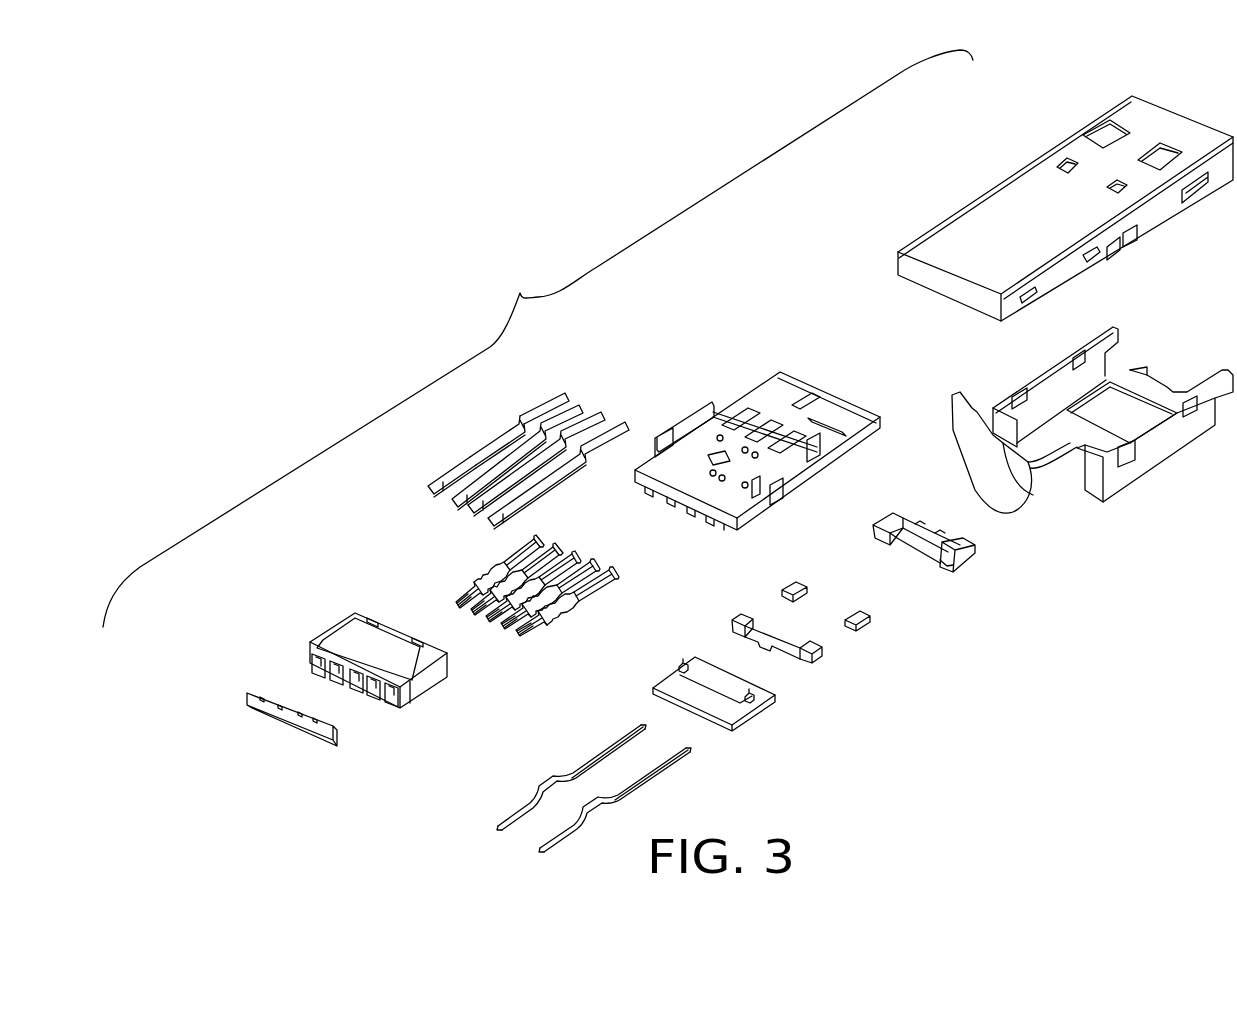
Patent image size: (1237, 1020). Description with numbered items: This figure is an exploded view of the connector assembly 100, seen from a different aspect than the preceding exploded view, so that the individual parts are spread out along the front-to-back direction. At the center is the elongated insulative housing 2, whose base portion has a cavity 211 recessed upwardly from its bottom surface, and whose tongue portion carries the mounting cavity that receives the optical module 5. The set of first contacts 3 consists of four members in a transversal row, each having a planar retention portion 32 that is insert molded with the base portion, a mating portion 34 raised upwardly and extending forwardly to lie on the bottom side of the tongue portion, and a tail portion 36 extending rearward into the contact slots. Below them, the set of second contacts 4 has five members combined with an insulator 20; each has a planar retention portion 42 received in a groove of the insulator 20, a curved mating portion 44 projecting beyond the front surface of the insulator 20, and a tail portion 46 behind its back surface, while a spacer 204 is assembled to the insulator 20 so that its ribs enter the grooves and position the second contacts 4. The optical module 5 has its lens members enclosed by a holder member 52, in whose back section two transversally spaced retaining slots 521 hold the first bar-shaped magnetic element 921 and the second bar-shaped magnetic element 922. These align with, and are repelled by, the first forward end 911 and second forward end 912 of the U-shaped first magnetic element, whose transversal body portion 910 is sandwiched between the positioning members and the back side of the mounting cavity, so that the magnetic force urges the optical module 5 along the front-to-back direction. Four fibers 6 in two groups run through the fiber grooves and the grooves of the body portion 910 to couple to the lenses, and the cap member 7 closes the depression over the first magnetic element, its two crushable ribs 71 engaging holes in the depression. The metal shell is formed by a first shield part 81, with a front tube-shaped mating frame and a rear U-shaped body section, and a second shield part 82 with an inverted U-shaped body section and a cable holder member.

The connector assembly 100 is at (520, 293).
The first shield part 81 is at (988, 166).
The second shield part 82 is at (1012, 371).
The insulative housing 2 is at (737, 439).
The cavity 211 is at (710, 440).
The first contacts 3 is at (491, 444).
The retention portion 32 is at (480, 455).
The mating portion 34 is at (546, 405).
The tail portion 36 is at (440, 480).
The second contacts 4 is at (527, 619).
The retention portion 42 is at (570, 613).
The mating portion 44 is at (620, 578).
The tail portion 46 is at (538, 640).
The insulator 20 is at (318, 617).
The spacer 204 is at (232, 680).
The optical module 5 is at (933, 558).
The holder member 52 is at (967, 560).
The retaining slots 521 is at (946, 566).
The fibers 6 is at (540, 768).
The cap member 7 is at (699, 705).
The crushable ribs 71 is at (755, 700).
The body portion 910 is at (798, 638).
The first forward end 911 is at (825, 657).
The second forward end 912 is at (740, 618).
The first bar-shaped magnetic element 921 is at (872, 613).
The second bar-shaped magnetic element 922 is at (788, 588).